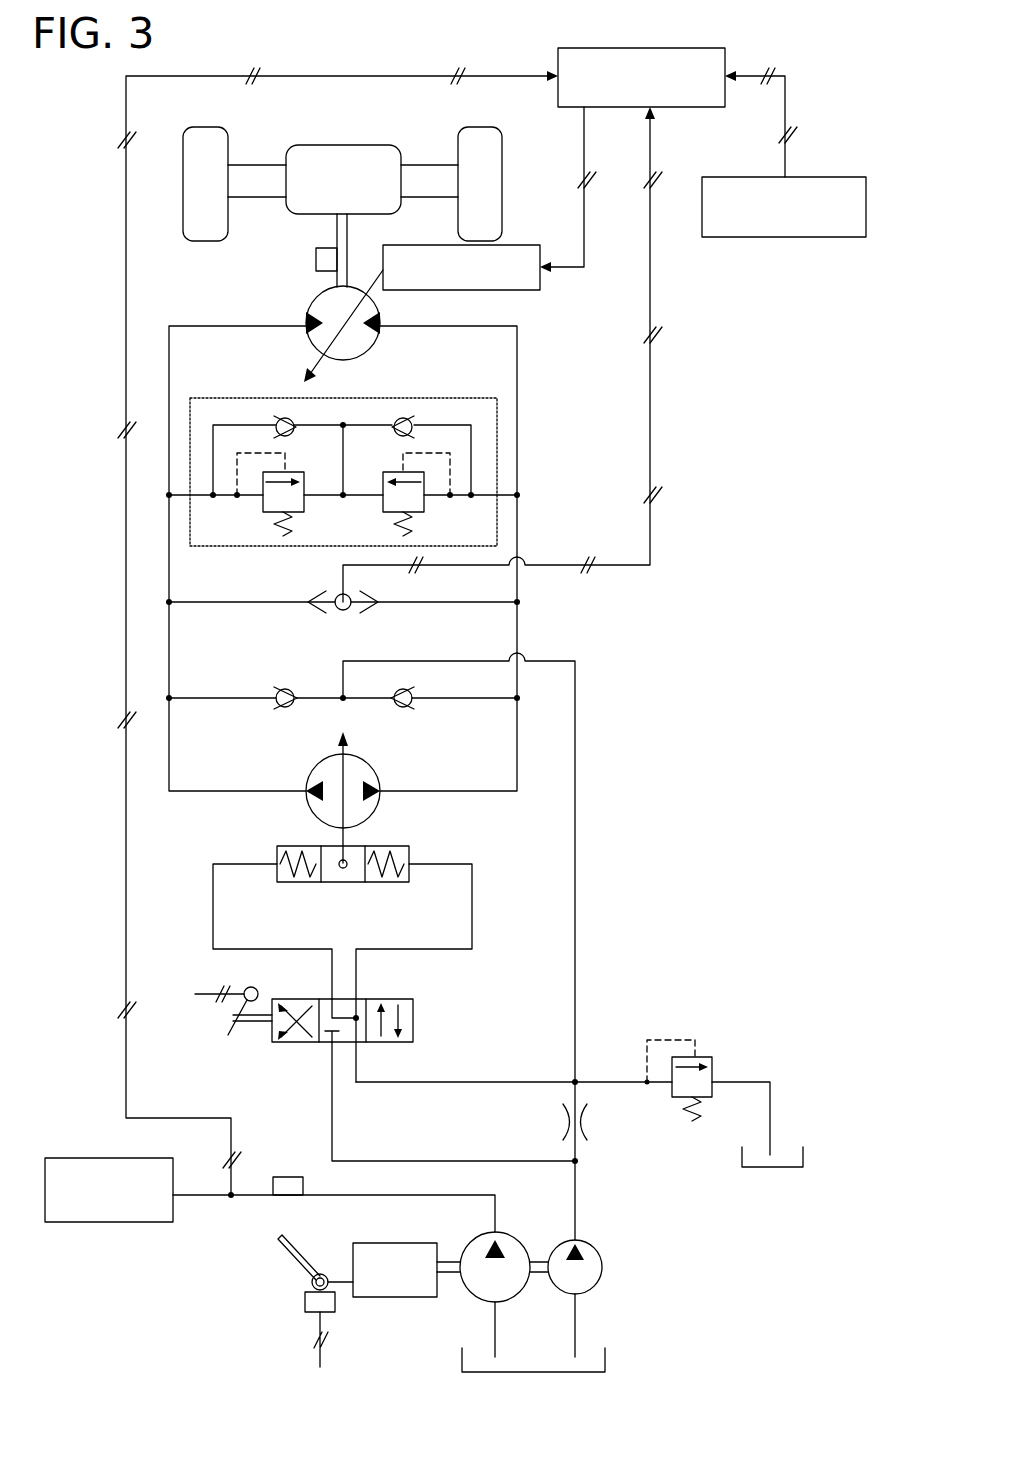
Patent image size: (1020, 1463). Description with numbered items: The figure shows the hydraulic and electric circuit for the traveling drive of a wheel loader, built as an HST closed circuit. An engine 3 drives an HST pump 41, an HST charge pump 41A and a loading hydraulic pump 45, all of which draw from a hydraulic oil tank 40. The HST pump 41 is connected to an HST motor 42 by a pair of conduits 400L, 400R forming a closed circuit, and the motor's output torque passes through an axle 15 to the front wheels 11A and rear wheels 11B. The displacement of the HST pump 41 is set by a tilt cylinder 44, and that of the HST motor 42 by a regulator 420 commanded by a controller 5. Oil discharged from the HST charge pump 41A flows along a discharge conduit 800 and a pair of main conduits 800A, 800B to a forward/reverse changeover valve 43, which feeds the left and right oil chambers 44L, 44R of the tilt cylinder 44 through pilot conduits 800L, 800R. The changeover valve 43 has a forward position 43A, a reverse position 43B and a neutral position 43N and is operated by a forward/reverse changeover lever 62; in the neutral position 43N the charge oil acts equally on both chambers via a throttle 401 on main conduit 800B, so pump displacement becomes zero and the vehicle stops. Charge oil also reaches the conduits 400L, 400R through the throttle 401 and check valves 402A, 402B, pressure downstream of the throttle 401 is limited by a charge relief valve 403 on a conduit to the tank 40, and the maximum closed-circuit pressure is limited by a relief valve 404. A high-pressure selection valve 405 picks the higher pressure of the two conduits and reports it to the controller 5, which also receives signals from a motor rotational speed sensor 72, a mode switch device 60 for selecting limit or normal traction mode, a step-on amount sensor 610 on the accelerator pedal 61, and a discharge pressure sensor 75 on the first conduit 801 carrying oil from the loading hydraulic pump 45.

The controller 5 is at (690, 48).
The front wheels 11A is at (207, 241).
The rear wheels 11B is at (478, 133).
The axle 15 is at (322, 146).
The motor rotational speed sensor 72 is at (316, 265).
The regulator 420 is at (520, 290).
The mode switch device 60 is at (840, 237).
The HST motor 42 is at (370, 352).
The conduit 400L is at (168, 370).
The conduit 400R is at (517, 365).
The relief valve 404 is at (258, 398).
The high-pressure selection valve 405 is at (362, 615).
The check valve 402A is at (276, 708).
The check valve 402B is at (410, 708).
The HST pump 41 is at (322, 770).
The tilt cylinder 44 is at (349, 869).
The left oil chamber 44L is at (296, 846).
The right oil chamber 44R is at (404, 846).
The discharge conduit 800 is at (576, 1212).
The pilot conduit 800L is at (213, 910).
The pilot conduit 800R is at (472, 908).
The forward/reverse changeover valve 43 is at (342, 1014).
The forward position 43A is at (412, 999).
The reverse position 43B is at (292, 998).
The neutral position 43N is at (330, 1042).
The forward/reverse changeover lever 62 is at (230, 1032).
The main conduit 800A is at (417, 1161).
The main conduit 800B is at (484, 1080).
The throttle 401 is at (590, 1124).
The charge relief valve 403 is at (710, 1057).
The hydraulic oil tank 40 is at (803, 1153).
The discharge pressure sensor 75 is at (288, 1176).
The first conduit 801 is at (379, 1196).
The loading hydraulic pump 45 is at (512, 1240).
The HST charge pump 41A is at (596, 1252).
The engine 3 is at (404, 1297).
The accelerator pedal 61 is at (288, 1254).
The step-on amount sensor 610 is at (304, 1306).